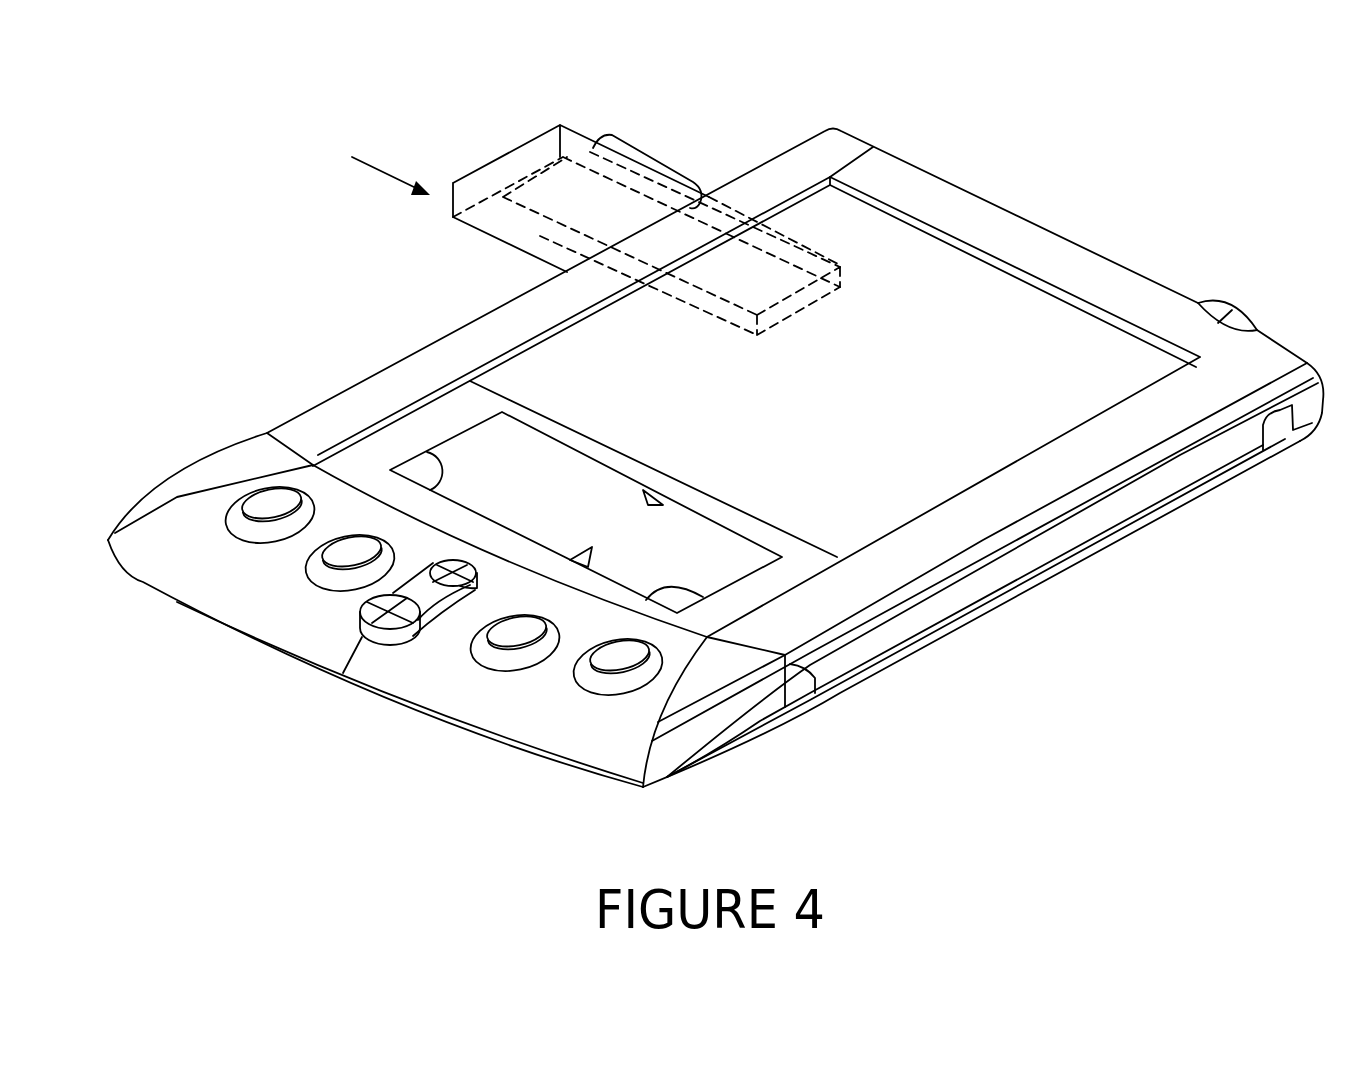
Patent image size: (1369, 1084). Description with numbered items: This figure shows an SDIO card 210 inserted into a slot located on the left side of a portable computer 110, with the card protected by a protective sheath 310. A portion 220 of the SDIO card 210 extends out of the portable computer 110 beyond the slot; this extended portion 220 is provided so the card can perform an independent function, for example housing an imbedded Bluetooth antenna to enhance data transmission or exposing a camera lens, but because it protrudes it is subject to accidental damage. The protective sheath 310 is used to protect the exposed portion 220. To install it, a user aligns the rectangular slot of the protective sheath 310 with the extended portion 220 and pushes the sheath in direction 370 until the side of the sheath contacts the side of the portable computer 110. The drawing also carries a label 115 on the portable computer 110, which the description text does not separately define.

The portable computer 110 is at (1220, 483).
The display screen 115 is at (398, 380).
The SDIO card 210 is at (540, 210).
The extended portion 220 is at (690, 182).
The protective sheath 310 is at (570, 115).
The direction 370 is at (380, 170).